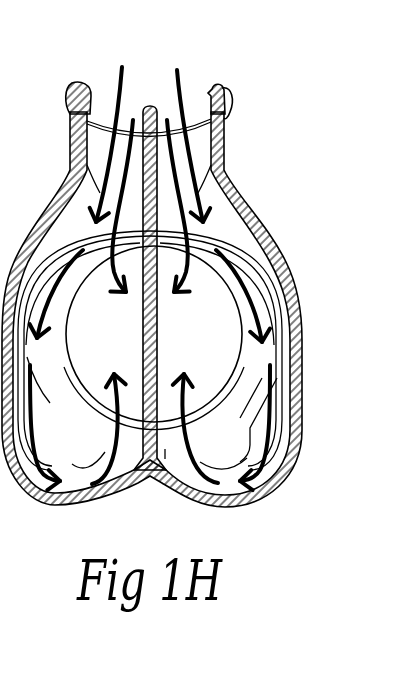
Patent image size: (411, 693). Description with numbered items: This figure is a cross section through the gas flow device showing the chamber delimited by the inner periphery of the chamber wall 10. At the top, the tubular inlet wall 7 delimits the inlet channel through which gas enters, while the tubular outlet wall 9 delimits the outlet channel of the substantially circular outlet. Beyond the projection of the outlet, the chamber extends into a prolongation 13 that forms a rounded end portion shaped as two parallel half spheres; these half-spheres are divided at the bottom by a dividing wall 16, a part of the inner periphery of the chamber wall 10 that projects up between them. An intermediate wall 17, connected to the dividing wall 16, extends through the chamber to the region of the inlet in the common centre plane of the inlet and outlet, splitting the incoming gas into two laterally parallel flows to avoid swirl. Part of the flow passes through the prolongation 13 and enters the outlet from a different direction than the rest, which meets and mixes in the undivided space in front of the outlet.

The tubular inlet wall 7 is at (226, 107).
The chamber wall 10 is at (276, 250).
The tubular outlet wall 9 is at (250, 352).
The intermediate wall 17 is at (137, 316).
The prolongation 13 is at (75, 468).
The dividing wall 16 is at (153, 477).